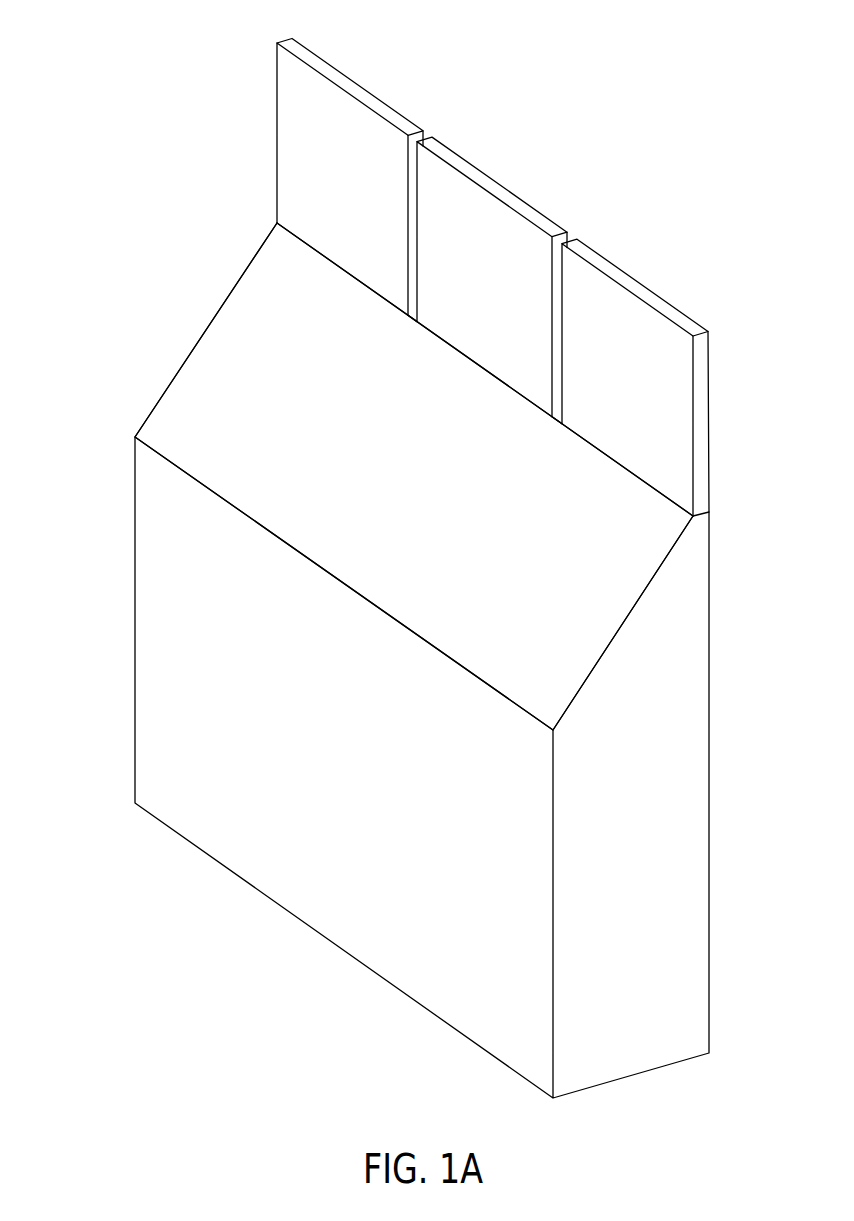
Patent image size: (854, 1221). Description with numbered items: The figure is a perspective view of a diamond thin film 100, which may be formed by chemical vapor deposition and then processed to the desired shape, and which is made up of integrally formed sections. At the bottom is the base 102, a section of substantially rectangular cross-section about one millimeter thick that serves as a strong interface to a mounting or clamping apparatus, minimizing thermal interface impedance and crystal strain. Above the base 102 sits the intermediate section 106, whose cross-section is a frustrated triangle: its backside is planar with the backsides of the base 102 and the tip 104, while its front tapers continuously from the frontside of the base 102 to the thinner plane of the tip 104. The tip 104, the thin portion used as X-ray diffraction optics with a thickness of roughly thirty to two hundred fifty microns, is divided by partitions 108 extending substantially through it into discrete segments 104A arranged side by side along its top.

The diamond thin film 100 is at (624, 82).
The base 102 is at (160, 625).
The tip 104 is at (254, 147).
The discrete segments 104A is at (361, 84).
The intermediate section 106 is at (220, 353).
The partitions 108 is at (557, 285).